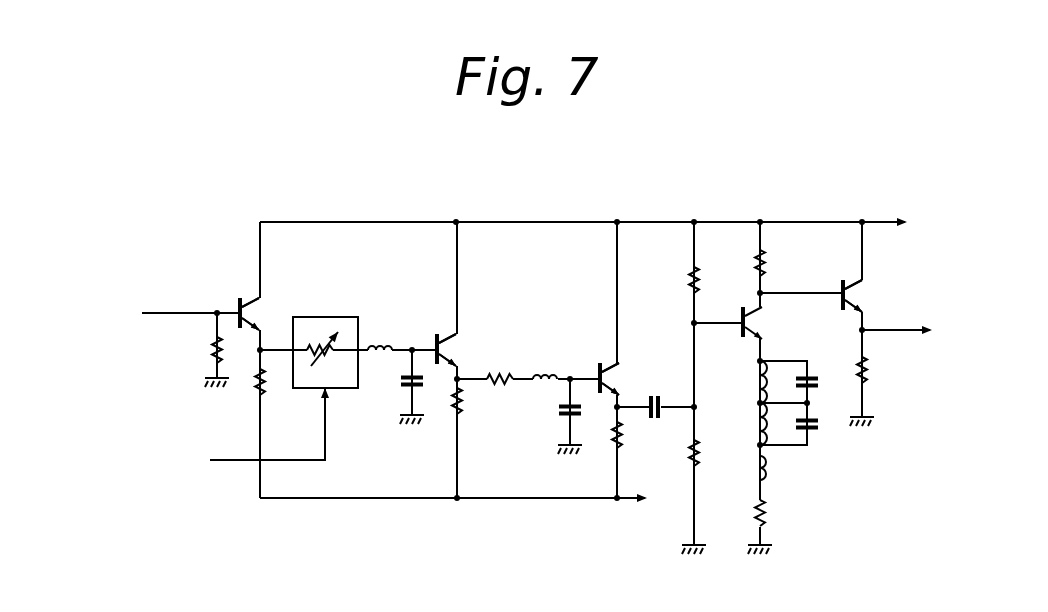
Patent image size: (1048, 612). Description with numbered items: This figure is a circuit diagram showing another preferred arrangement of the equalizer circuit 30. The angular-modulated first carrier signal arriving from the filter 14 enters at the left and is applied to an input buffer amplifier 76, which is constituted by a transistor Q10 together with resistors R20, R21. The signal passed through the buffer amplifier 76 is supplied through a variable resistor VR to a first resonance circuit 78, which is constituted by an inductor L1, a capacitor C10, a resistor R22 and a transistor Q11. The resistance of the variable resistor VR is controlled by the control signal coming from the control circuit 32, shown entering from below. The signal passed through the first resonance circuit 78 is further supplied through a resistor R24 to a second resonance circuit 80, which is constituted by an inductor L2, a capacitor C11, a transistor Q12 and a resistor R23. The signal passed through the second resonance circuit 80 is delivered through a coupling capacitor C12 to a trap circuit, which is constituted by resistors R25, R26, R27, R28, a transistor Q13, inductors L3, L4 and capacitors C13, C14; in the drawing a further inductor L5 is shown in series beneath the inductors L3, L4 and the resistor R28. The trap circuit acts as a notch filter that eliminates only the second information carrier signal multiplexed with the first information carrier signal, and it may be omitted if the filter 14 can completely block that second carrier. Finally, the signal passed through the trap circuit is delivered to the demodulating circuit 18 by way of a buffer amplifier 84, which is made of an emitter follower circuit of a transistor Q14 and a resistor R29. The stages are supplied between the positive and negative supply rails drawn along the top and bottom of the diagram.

The equalizer circuit 30 is at (352, 159).
The filter 14 is at (102, 307).
The control circuit 32 is at (137, 467).
The demodulating circuit 18 is at (965, 340).
The input buffer amplifier 76 is at (236, 290).
The first resonance circuit 78 is at (429, 332).
The second resonance circuit 80 is at (600, 357).
The buffer amplifier 84 is at (869, 282).
The transistor Q10 is at (256, 312).
The transistor Q11 is at (458, 349).
The transistor Q12 is at (620, 376).
The transistor Q13 is at (763, 322).
The transistor Q14 is at (865, 297).
The resistor R20 is at (212, 348).
The resistor R21 is at (257, 393).
The resistor R22 is at (463, 412).
The resistor R23 is at (612, 447).
The resistor R24 is at (501, 386).
The resistor R25 is at (689, 281).
The resistor R26 is at (702, 456).
The resistor R27 is at (768, 259).
The resistor R28 is at (770, 518).
The resistor R29 is at (869, 378).
The variable resistor VR is at (350, 316).
The inductor L1 is at (380, 346).
The inductor L2 is at (541, 374).
The inductor L3 is at (756, 384).
The inductor L4 is at (756, 428).
The inductor L5 is at (768, 474).
The capacitor C10 is at (400, 382).
The capacitor C11 is at (556, 416).
The coupling capacitor C12 is at (655, 420).
The capacitor C13 is at (820, 382).
The capacitor C14 is at (820, 430).